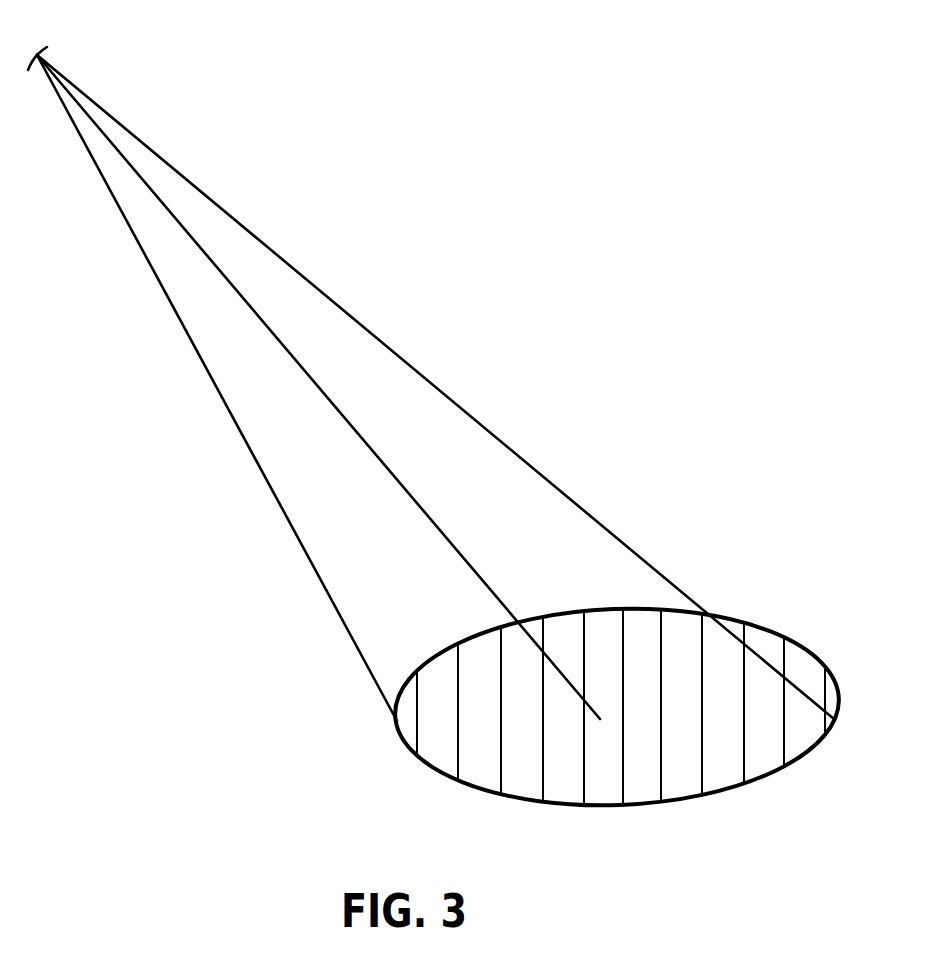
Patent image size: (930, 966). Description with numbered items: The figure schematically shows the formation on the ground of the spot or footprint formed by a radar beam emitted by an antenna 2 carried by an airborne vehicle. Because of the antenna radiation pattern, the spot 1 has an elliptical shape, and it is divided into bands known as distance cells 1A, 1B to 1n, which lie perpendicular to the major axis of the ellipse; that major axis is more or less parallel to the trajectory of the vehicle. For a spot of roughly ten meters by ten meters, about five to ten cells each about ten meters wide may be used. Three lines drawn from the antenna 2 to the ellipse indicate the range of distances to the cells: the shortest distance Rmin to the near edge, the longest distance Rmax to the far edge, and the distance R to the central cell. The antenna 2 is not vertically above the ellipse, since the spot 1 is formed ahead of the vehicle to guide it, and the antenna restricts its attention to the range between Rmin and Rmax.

The spot 1 is at (688, 801).
The distance cell 1A is at (407, 733).
The distance cell 1B is at (440, 760).
The distance cell 1n is at (835, 728).
The antenna 2 is at (40, 50).
The distance to the central cell R is at (354, 424).
The maximum distance Rmax is at (395, 348).
The minimum distance Rmin is at (278, 500).